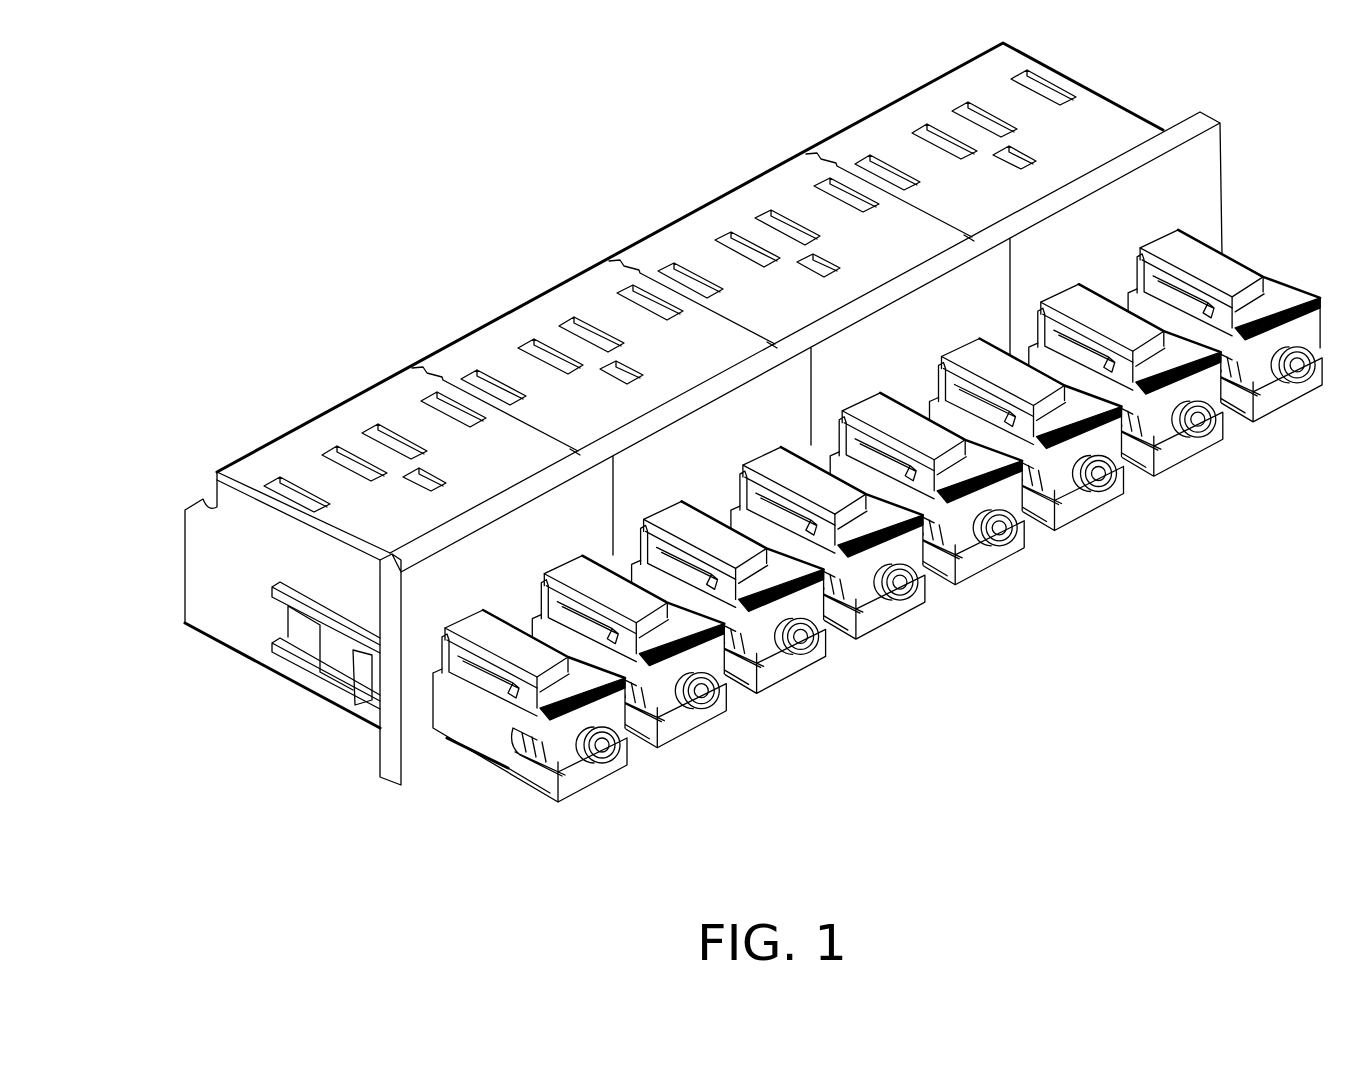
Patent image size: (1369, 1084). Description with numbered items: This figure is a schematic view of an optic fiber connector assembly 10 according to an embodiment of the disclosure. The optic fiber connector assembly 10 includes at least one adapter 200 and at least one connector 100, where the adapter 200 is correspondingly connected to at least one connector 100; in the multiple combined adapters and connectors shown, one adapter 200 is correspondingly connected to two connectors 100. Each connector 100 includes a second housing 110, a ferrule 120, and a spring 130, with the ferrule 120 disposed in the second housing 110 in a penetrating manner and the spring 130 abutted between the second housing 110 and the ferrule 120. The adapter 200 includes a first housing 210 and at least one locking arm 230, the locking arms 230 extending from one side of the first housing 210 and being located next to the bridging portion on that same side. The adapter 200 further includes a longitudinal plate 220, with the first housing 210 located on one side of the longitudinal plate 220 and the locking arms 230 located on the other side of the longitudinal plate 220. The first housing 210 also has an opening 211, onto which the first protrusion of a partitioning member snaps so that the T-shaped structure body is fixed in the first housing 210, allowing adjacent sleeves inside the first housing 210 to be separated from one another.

The optic fiber connector assembly 10 is at (214, 160).
The connector 100 is at (480, 831).
The second housing 110 is at (483, 720).
The ferrule 120 is at (604, 757).
The spring 130 is at (541, 757).
The adapter 200 is at (243, 732).
The first housing 210 is at (288, 450).
The opening 211 is at (432, 482).
The longitudinal plate 220 is at (385, 742).
The locking arm 230 is at (497, 632).